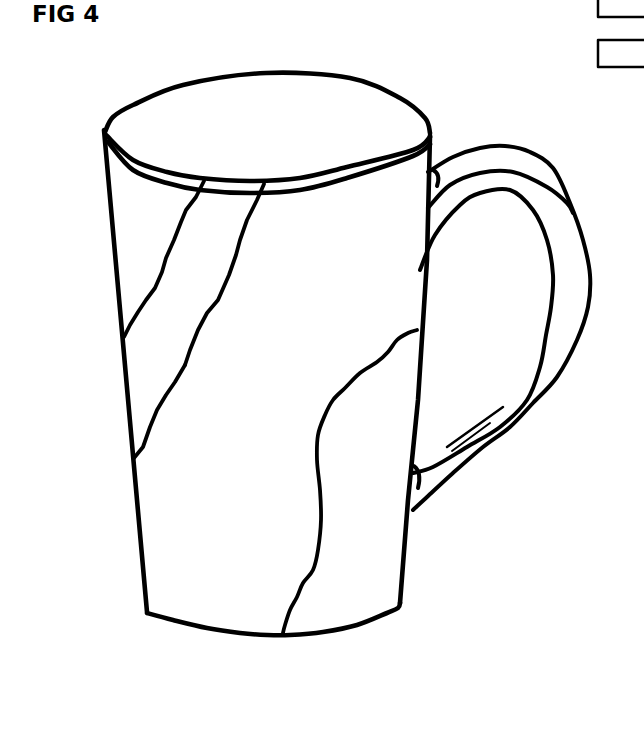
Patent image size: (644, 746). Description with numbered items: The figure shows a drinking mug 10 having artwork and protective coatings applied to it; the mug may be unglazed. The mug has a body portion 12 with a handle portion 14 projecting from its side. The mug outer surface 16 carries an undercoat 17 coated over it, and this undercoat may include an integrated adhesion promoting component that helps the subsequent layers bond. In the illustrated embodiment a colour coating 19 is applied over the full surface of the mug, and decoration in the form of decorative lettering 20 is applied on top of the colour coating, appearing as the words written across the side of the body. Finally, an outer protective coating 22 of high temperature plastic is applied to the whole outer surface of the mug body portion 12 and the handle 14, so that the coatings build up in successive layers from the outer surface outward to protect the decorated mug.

The drinking mug 10 is at (486, 108).
The body portion 12 is at (438, 597).
The handle portion 14 is at (585, 173).
The mug outer surface 16 is at (143, 230).
The undercoat 17 is at (157, 353).
The colour coating 19 is at (143, 452).
The decorative lettering 20 is at (178, 422).
The outer protective coating 22 is at (357, 593).